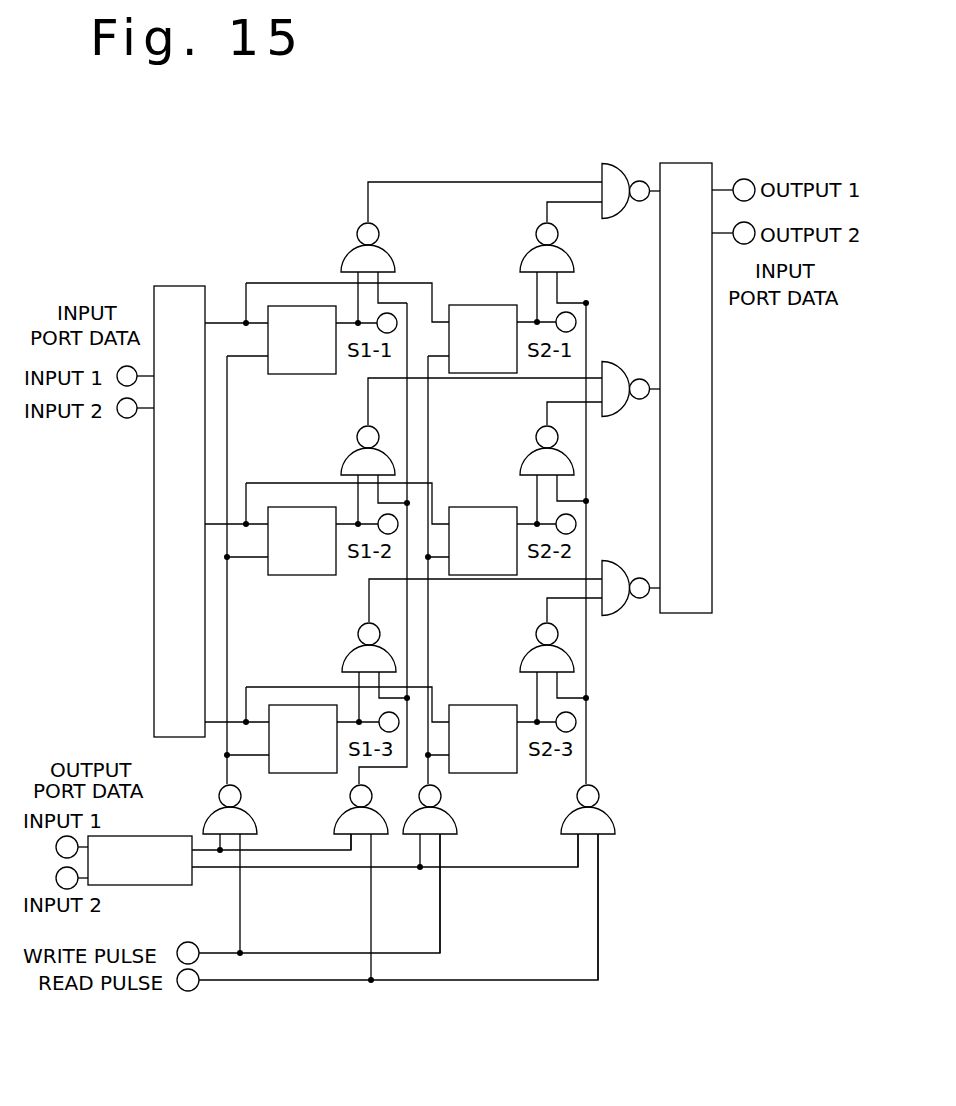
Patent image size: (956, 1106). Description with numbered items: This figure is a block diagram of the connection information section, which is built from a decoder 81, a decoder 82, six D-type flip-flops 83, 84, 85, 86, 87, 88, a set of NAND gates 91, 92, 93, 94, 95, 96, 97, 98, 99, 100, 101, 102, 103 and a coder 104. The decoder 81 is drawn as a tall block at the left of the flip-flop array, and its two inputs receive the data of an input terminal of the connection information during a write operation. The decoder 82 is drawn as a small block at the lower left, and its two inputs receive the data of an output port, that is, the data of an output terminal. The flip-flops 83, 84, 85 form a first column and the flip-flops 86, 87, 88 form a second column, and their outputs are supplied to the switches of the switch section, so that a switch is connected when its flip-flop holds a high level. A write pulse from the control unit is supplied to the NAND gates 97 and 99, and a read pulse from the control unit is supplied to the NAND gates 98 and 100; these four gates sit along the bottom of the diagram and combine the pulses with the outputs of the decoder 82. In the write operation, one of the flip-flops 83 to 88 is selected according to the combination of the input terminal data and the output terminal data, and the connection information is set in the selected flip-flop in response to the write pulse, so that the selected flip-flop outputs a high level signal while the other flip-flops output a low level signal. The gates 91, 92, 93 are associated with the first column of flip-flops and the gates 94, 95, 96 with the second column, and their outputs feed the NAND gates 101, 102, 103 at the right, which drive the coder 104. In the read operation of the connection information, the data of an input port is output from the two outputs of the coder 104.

The decoder 81 is at (184, 286).
The decoder 82 is at (138, 836).
The D-type flip-flop 83 is at (290, 376).
The D-type flip-flop 84 is at (290, 576).
The D-type flip-flop 85 is at (292, 774).
The D-type flip-flop 86 is at (458, 304).
The D-type flip-flop 87 is at (460, 505).
The D-type flip-flop 88 is at (460, 703).
The NAND gate 91 is at (392, 262).
The NAND gate 92 is at (345, 455).
The NAND gate 93 is at (346, 660).
The NAND gate 94 is at (576, 260).
The NAND gate 95 is at (529, 455).
The NAND gate 96 is at (529, 656).
The NAND gate 97 is at (203, 812).
The NAND gate 98 is at (334, 830).
The NAND gate 99 is at (458, 814).
The NAND gate 100 is at (612, 814).
The NAND gate 101 is at (626, 172).
The NAND gate 102 is at (622, 358).
The NAND gate 103 is at (618, 560).
The coder 104 is at (672, 160).